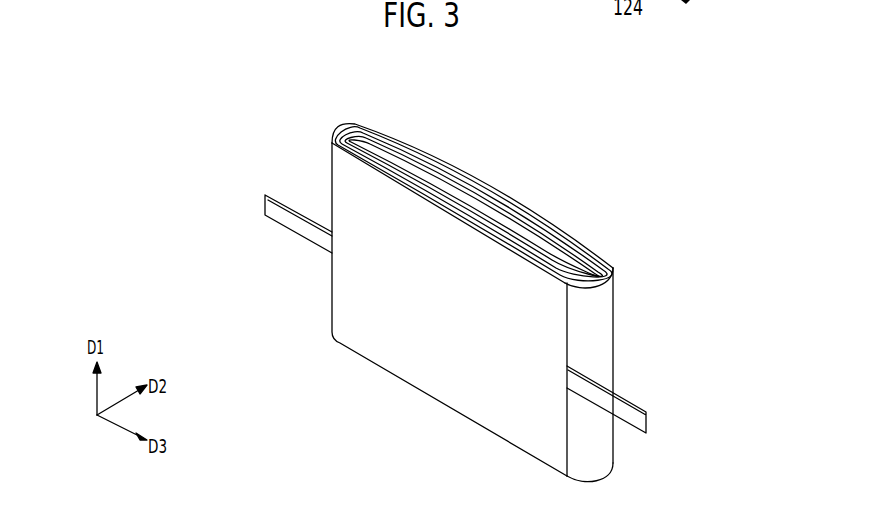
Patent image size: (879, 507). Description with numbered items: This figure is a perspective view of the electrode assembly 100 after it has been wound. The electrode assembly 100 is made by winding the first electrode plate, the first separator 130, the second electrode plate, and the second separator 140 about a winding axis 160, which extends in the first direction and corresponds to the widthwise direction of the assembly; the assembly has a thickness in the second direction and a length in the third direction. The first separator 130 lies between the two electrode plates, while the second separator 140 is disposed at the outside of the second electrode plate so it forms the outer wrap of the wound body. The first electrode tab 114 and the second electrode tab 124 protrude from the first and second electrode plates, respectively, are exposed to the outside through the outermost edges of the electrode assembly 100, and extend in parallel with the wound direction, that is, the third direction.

The electrode assembly 100 is at (283, 121).
The first electrode tab 114 is at (286, 215).
The second electrode tab 124 is at (637, 418).
The first separator 130 is at (603, 323).
The second separator 140 is at (387, 353).
The winding axis 160 is at (476, 472).